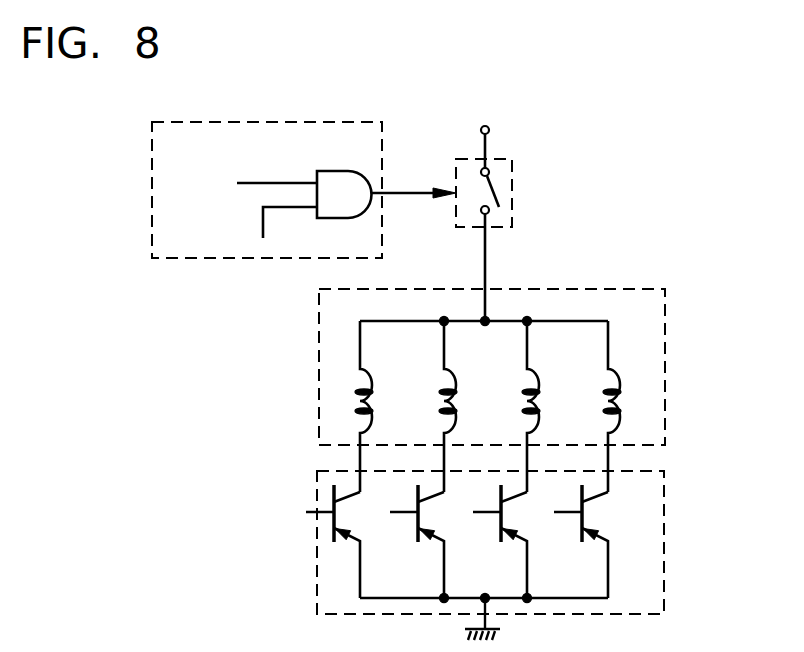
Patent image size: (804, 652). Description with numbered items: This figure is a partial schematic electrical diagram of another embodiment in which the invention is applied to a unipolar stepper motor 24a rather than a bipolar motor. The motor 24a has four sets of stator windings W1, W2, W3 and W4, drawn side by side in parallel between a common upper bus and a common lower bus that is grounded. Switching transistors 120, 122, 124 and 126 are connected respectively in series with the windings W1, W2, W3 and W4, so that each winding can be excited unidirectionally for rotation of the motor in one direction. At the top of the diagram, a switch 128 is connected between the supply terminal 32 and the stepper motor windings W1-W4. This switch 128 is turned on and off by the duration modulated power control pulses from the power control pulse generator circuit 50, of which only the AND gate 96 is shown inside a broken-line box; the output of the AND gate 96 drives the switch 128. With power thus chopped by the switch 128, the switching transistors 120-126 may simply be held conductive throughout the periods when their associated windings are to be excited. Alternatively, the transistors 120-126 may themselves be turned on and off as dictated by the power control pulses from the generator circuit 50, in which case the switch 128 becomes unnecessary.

The power control pulse generator circuit 50 is at (150, 134).
The AND gate 96 is at (339, 171).
The supply terminal 32 is at (489, 130).
The switch 128 is at (515, 218).
The unipolar stepper motor 24a is at (529, 390).
The stator winding W1 is at (376, 397).
The stator winding W2 is at (460, 397).
The stator winding W3 is at (543, 397).
The stator winding W4 is at (632, 406).
The switching transistor 120 is at (349, 498).
The switching transistor 122 is at (433, 498).
The switching transistor 124 is at (516, 498).
The switching transistor 126 is at (597, 498).